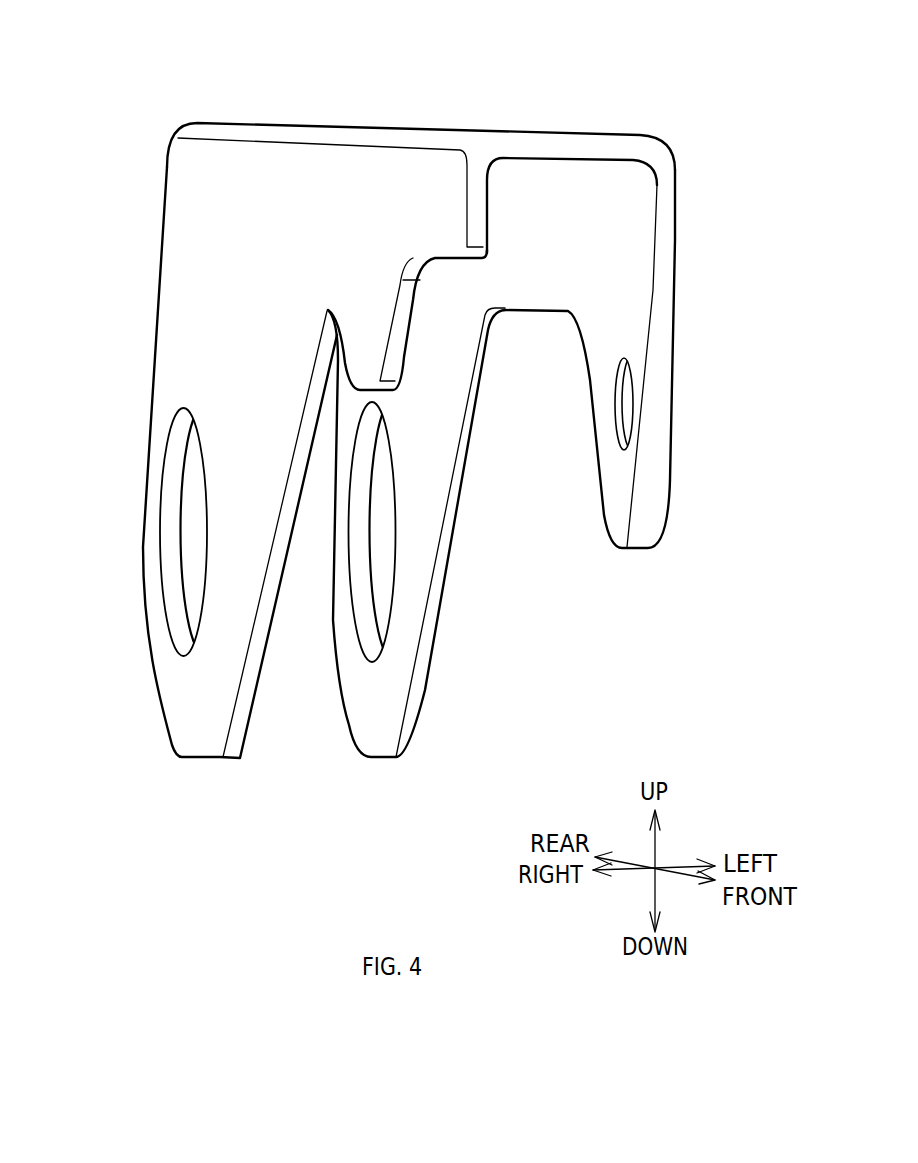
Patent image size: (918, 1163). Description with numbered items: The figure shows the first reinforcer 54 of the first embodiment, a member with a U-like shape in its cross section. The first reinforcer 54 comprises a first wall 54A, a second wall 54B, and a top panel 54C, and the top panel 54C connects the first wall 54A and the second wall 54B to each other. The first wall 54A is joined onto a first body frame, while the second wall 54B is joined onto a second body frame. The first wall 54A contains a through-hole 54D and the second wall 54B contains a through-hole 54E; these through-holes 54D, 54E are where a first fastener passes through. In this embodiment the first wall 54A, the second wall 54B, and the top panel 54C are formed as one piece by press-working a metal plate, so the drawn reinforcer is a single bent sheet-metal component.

The first reinforcer 54 is at (393, 383).
The first wall 54A is at (203, 293).
The second wall 54B is at (595, 257).
The top panel 54C is at (375, 128).
The through-hole 54D is at (172, 578).
The through-hole 54E is at (362, 599).